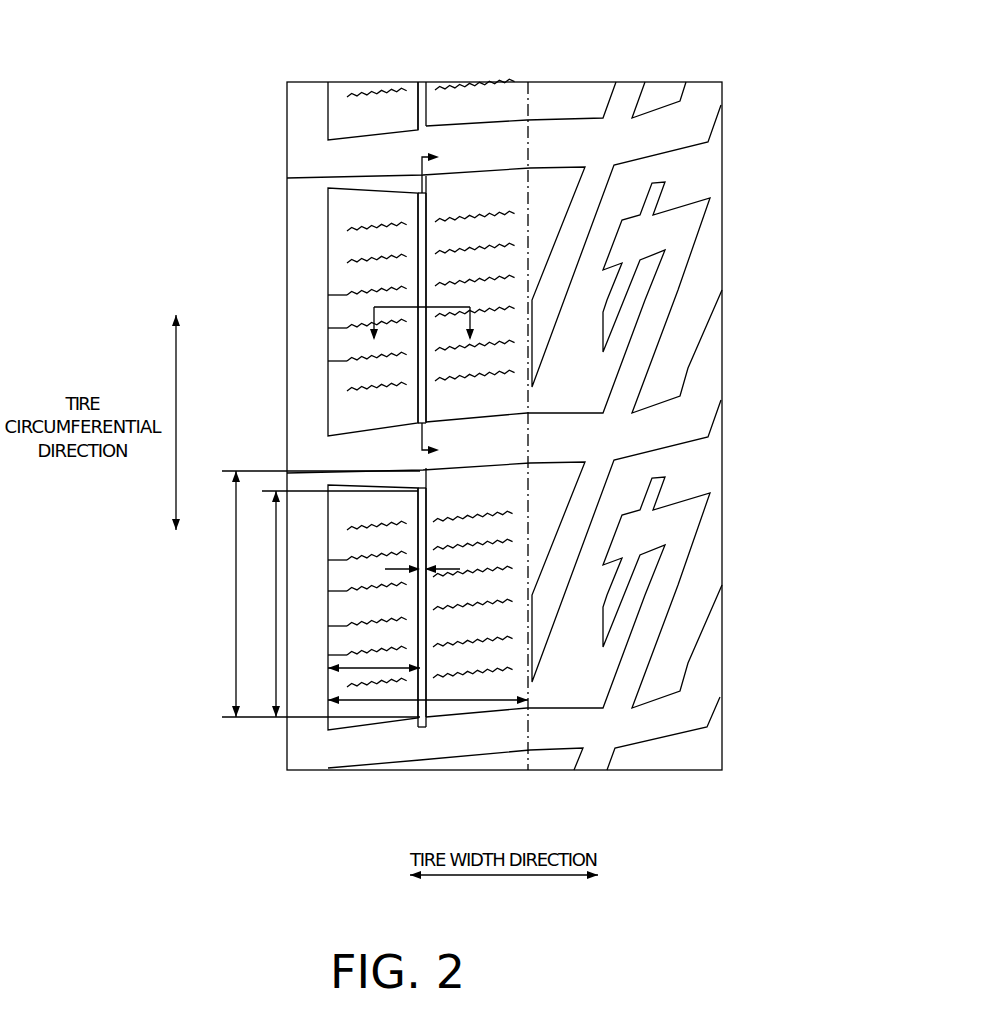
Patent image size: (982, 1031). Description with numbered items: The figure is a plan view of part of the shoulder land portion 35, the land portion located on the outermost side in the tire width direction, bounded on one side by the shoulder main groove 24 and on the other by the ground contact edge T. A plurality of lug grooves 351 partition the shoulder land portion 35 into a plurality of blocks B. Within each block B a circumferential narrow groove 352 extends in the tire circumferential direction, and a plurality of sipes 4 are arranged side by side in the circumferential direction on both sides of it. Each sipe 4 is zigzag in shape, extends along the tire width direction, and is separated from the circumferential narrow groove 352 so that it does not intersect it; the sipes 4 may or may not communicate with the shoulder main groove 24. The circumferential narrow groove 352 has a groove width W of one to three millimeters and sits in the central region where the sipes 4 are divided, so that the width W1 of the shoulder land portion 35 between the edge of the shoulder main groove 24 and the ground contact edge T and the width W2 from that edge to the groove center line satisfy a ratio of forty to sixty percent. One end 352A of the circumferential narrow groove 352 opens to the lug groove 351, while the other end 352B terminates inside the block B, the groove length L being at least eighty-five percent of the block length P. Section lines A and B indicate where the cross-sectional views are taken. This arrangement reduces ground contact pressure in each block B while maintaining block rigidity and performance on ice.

The shoulder main groove 24 is at (300, 97).
The shoulder land portion 35 is at (498, 412).
The lug groove 351 is at (498, 132).
The circumferential narrow groove 352 is at (352, 451).
The one end of the circumferential narrow groove 352A is at (418, 423).
The other end of the circumferential narrow groove 352B is at (420, 192).
The sipe 4 is at (405, 243).
The ground contact edge T is at (533, 102).
The block B is at (757, 475).
The line A- A is at (439, 304).
The groove width of the circumferential narrow groove W is at (422, 560).
The width of the shoulder land portion W1 is at (443, 700).
The width between the shoulder main groove edge and the narrow groove center line W2 is at (363, 667).
The block length P is at (319, 594).
The length of the circumferential narrow groove L is at (340, 604).